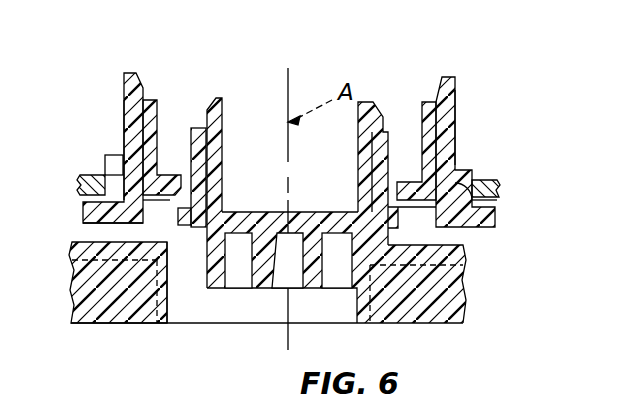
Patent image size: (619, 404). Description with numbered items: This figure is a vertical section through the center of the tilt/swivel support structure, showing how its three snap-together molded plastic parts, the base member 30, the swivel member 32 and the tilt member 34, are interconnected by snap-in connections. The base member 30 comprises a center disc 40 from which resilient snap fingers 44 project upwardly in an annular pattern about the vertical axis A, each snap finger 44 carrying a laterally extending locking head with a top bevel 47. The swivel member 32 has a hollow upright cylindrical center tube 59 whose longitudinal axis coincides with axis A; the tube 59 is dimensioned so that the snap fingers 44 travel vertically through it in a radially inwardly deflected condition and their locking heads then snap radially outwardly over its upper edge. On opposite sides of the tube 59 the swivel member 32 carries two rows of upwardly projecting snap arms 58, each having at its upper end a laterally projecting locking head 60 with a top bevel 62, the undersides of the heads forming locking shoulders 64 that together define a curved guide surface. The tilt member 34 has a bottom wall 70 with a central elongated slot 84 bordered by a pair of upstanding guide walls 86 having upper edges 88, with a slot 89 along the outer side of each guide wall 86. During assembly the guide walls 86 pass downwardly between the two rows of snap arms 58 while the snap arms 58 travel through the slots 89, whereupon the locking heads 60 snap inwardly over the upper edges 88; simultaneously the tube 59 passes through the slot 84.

The base member 30 is at (455, 330).
The swivel member 32 is at (470, 74).
The tilt member 34 is at (157, 210).
The center disc 40 is at (467, 283).
The snap finger 44 is at (221, 108).
The top bevel 47 is at (375, 102).
The snap arm 58 is at (124, 100).
The center tube 59 is at (166, 238).
The locking head 60 is at (130, 73).
The top bevel 62 is at (144, 99).
The locking shoulder 64 is at (423, 102).
The bottom wall 70 is at (493, 180).
The elongated slot 84 is at (393, 192).
The guide wall 86 is at (158, 140).
The upper edge 88 is at (158, 98).
The slot 89 is at (105, 165).